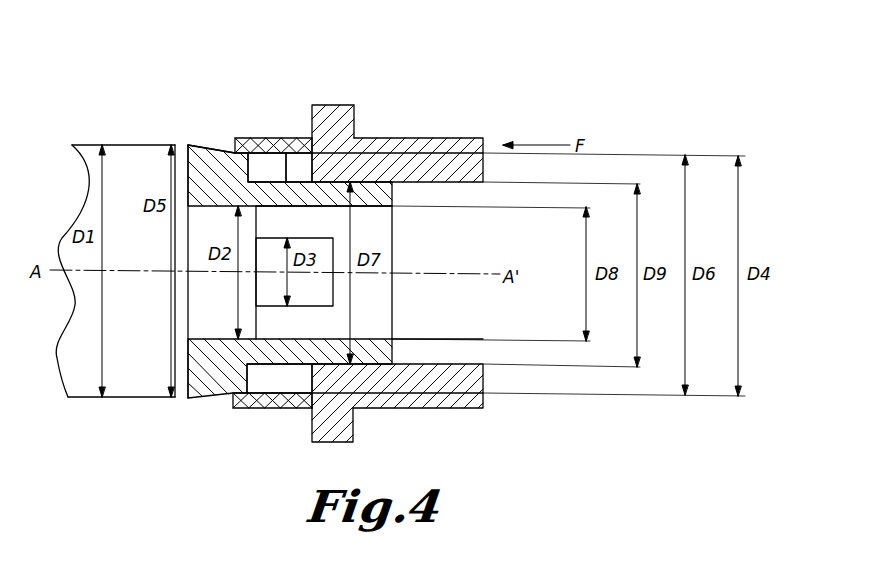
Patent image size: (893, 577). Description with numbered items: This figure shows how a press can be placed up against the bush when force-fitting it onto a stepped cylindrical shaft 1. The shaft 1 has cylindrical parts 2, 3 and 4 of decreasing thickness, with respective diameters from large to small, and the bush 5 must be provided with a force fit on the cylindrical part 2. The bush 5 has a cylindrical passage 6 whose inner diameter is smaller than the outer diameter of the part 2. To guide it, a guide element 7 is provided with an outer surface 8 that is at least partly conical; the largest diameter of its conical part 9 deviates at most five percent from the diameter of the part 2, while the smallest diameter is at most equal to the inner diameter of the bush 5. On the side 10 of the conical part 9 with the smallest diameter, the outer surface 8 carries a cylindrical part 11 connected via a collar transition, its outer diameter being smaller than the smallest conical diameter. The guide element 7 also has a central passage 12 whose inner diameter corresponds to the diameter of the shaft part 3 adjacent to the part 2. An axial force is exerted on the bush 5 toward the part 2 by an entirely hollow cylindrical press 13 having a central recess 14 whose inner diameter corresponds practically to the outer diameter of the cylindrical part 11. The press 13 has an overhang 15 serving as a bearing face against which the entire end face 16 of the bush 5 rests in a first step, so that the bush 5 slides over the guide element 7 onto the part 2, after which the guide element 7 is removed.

The stepped cylindrical shaft 1 is at (72, 72).
The cylindrical part of the shaft 2 is at (130, 150).
The cylindrical part of the shaft 3 is at (207, 327).
The cylindrical part of the shaft 4 is at (267, 297).
The bush 5 is at (240, 150).
The cylindrical passage 6 is at (268, 163).
The guide element 7 is at (215, 157).
The outer surface 8 is at (262, 90).
The conical part 9 is at (200, 147).
The side 10 is at (237, 85).
The cylindrical part 11 is at (293, 162).
The central passage 12 is at (377, 224).
The cylindrical press 13 is at (447, 153).
The central recess 14 is at (443, 315).
The overhang 15 is at (345, 112).
The end face 16 is at (312, 395).